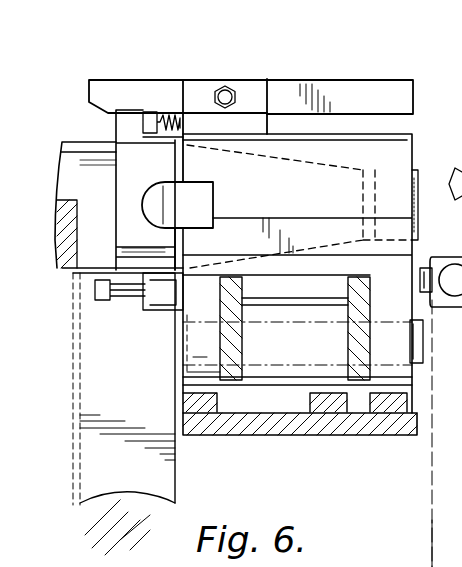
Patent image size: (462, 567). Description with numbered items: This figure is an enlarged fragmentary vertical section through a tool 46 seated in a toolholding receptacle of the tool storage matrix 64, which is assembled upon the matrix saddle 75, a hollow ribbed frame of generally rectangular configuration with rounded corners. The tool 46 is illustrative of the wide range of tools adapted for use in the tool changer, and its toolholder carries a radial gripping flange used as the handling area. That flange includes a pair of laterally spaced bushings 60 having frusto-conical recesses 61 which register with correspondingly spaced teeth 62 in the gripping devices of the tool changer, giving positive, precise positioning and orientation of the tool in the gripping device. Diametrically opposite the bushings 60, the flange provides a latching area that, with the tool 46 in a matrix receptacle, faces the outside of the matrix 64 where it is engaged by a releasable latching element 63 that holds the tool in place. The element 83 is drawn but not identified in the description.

The tool 46 is at (81, 128).
The releasable latching element 63 is at (288, 88).
The frusto-conical recesses 61 is at (406, 160).
The bushings 60 is at (113, 303).
The teeth 62 is at (90, 302).
The matrix saddle 75 is at (288, 438).
The tool storage matrix 64 is at (436, 433).
The rod 83 is at (447, 543).